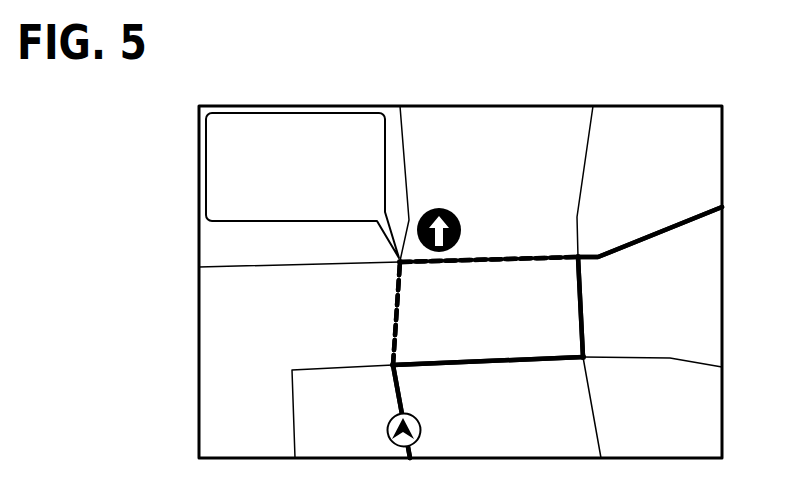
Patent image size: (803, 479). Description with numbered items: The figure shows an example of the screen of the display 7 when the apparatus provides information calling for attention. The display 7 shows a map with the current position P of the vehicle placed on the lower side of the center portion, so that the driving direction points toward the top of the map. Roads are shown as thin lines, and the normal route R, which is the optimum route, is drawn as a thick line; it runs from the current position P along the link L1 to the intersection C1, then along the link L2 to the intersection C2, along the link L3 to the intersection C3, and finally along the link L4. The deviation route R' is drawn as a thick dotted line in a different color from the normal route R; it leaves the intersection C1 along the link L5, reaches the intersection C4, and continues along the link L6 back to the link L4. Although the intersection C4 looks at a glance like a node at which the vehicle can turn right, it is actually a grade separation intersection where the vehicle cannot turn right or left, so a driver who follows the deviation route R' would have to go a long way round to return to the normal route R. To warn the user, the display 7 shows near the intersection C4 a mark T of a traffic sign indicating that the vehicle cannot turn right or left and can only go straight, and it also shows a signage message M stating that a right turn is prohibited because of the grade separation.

The display 7 is at (657, 106).
The message M is at (296, 107).
The mark of a traffic sign T is at (454, 203).
The current position P is at (421, 427).
The normal route R is at (557, 332).
The deviation route R' is at (485, 283).
The link L1 is at (400, 396).
The link L2 is at (500, 368).
The link L3 is at (585, 306).
The link L4 is at (650, 233).
The link L5 is at (400, 307).
The link L6 is at (475, 267).
The intersection C1 is at (391, 364).
The intersection C2 is at (585, 360).
The intersection C3 is at (579, 256).
The intersection C4 is at (399, 263).